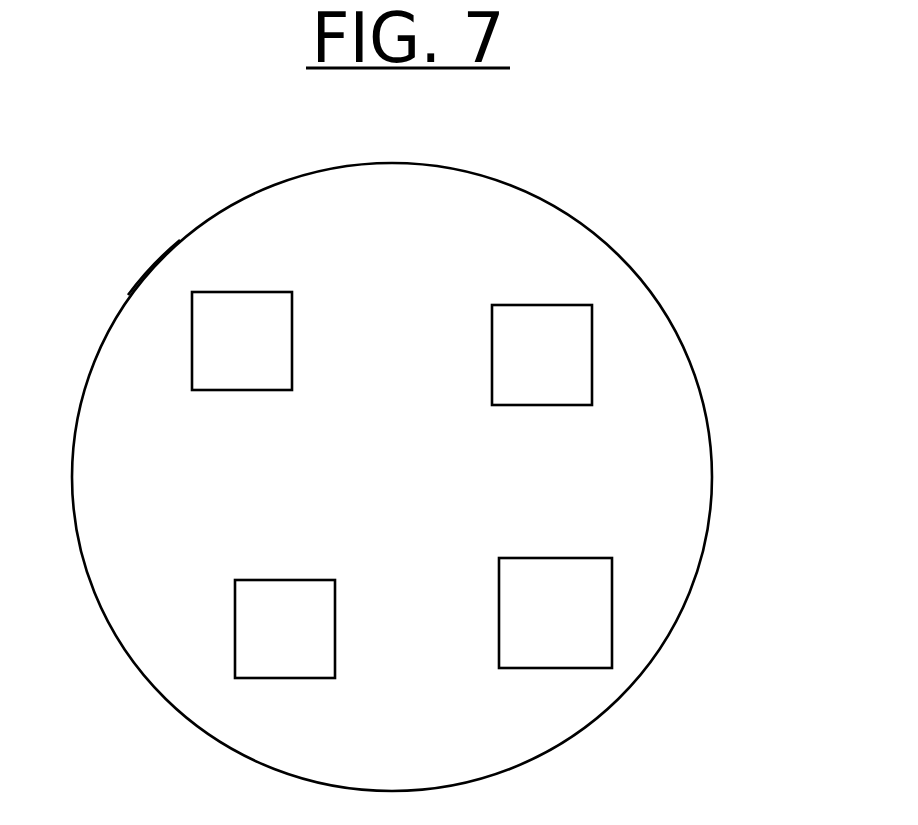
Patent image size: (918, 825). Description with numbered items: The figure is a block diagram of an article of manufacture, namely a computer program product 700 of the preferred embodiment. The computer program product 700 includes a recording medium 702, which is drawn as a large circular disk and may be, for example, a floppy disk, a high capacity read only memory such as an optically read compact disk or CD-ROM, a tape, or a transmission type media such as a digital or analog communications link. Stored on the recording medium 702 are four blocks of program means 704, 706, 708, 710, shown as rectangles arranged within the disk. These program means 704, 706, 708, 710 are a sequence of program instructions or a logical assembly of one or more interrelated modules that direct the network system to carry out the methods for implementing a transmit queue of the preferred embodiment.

The computer program product 700 is at (672, 264).
The recording medium 702 is at (122, 289).
The program means 704 is at (285, 629).
The program means 706 is at (555, 613).
The program means 708 is at (542, 355).
The program means 710 is at (242, 341).